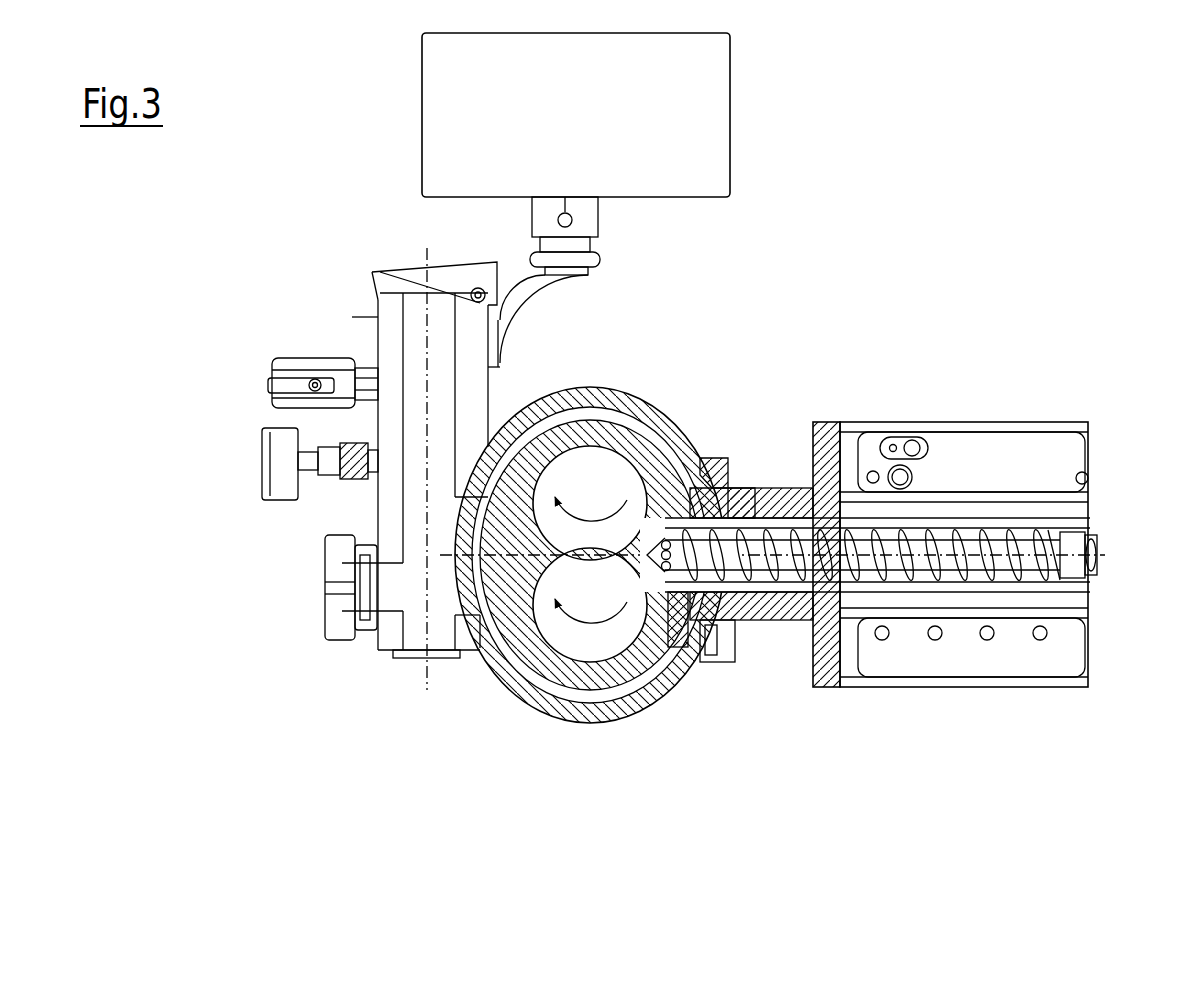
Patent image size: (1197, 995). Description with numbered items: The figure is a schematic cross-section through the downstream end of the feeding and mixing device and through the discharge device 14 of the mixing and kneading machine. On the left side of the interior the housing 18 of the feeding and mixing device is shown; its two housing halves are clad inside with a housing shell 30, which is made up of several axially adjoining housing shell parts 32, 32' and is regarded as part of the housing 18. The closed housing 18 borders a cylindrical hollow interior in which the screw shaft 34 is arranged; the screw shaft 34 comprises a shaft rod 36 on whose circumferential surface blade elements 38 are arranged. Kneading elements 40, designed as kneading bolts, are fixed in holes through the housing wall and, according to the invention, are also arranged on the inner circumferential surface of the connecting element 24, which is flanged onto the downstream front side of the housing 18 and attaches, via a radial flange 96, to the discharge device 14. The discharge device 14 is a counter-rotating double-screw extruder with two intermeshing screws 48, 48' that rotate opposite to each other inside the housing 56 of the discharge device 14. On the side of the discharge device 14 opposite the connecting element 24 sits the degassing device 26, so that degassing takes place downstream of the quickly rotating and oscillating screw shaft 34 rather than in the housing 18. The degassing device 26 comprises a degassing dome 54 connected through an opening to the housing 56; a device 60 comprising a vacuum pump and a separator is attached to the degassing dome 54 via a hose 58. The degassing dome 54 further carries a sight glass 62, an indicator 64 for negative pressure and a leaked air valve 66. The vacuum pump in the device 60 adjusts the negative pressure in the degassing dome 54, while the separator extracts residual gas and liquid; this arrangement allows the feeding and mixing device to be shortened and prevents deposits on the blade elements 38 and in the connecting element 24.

The discharge device 14 is at (667, 358).
The housing 18 is at (872, 688).
The connecting element 24 is at (788, 488).
The degassing device 26 is at (312, 262).
The housing shell 30 is at (962, 605).
The housing shell part 32 is at (833, 475).
The housing shell part 32' is at (1010, 475).
The screw shaft 34 is at (718, 640).
The shaft rod 36 is at (732, 470).
The blade elements 38 is at (690, 560).
The kneading elements 40 is at (1005, 548).
The screw of the discharge device 48 is at (623, 470).
The screw of the discharge device 48' is at (587, 672).
The degassing dome 54 is at (413, 613).
The housing of the discharge device 56 is at (485, 667).
The hose 58 is at (572, 290).
The device comprising a vacuum pump and separator 60 is at (733, 121).
The sight glass 62 is at (337, 610).
The negative pressure indicator 64 is at (280, 452).
The leaked air valve 66 is at (287, 360).
The radial flange 96 is at (715, 457).